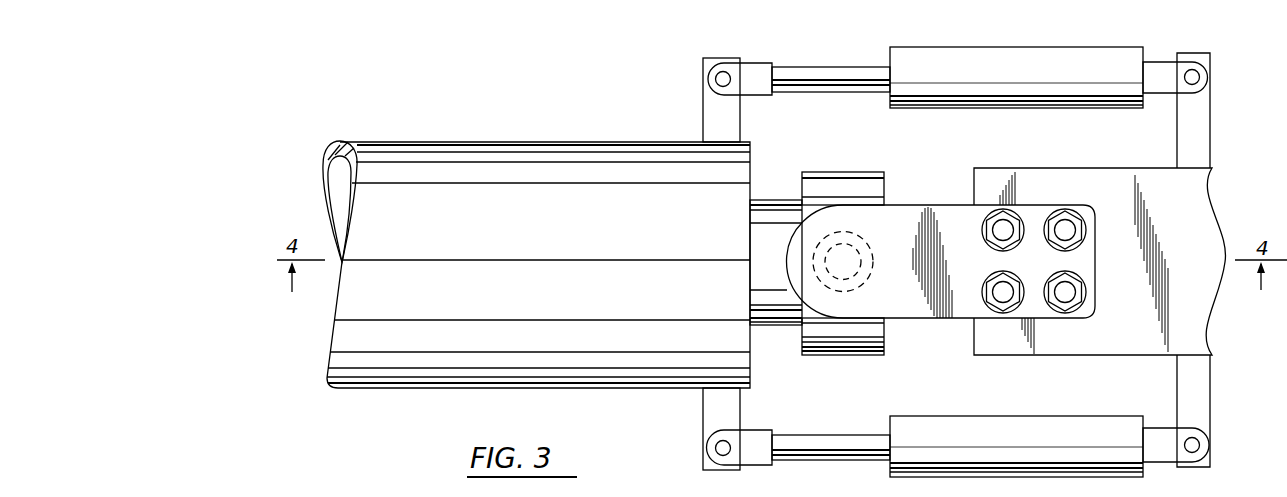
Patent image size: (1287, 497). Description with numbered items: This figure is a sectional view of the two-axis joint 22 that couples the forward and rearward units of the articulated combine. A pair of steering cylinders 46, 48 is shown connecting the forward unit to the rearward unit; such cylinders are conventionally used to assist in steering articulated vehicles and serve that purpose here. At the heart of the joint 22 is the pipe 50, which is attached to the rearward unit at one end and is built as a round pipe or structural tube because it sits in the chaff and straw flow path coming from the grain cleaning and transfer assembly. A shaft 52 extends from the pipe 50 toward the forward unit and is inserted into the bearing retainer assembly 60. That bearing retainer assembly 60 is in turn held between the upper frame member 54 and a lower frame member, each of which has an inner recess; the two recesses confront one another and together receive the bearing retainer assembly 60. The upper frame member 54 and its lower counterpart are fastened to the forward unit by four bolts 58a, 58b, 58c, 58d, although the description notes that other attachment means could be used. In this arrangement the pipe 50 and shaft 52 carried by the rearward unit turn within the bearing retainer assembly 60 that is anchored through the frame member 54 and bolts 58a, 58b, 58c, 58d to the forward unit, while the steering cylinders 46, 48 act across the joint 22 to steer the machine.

The joint 22 is at (600, 97).
The steering cylinder 46 is at (912, 50).
The steering cylinder 48 is at (920, 471).
The pipe 50 is at (508, 141).
The shaft 52 is at (773, 201).
The upper frame member 54 is at (932, 318).
The bolt 58a is at (996, 307).
The bolt 58b is at (1064, 307).
The bolt 58c is at (998, 216).
The bolt 58d is at (1059, 215).
The bearing retainer assembly 60 is at (863, 174).